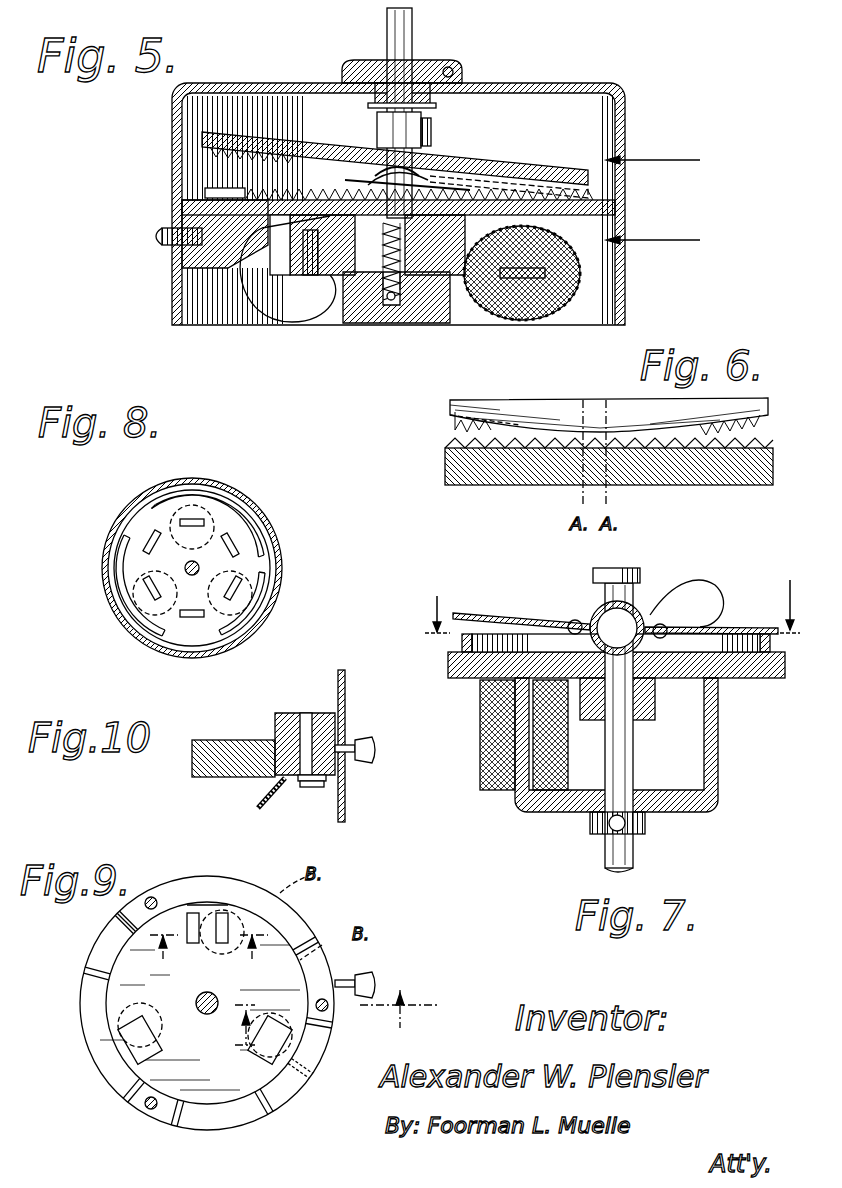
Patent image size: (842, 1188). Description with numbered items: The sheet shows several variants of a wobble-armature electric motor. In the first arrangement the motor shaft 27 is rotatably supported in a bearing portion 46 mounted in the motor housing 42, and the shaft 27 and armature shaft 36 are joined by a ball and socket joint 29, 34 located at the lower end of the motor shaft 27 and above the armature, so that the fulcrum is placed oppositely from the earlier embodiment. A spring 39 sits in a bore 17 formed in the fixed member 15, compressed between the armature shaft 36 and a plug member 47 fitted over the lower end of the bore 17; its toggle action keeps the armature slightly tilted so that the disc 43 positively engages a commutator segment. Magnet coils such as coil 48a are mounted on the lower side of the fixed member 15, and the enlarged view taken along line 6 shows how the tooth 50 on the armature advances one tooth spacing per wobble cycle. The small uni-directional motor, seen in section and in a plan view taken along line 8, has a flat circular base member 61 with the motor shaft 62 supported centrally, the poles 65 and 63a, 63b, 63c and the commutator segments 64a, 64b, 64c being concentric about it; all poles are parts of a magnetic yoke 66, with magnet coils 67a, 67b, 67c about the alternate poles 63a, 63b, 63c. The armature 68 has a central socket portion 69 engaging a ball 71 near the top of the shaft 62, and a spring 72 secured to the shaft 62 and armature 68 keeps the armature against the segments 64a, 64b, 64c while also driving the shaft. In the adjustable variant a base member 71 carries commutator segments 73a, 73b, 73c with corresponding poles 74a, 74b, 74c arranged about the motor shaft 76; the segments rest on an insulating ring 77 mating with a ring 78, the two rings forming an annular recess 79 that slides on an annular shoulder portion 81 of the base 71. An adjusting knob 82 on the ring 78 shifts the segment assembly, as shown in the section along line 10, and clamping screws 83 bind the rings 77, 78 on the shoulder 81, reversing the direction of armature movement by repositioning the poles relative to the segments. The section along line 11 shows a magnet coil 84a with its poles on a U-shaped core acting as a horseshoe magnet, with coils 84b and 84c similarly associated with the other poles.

In FIG. 5, the section line 6 is at (665, 200).
In FIG. 7, the section line 8 is at (612, 592).
In FIG. 9, the section line 10 is at (327, 1012).
In FIG. 9, the section line 11 is at (206, 960).
In FIG. 5, the fixed member 15 is at (615, 208).
In FIG. 5, the bore 17 is at (340, 312).
In FIG. 5, the motor shaft 27 is at (412, 33).
In FIG. 5, the ball 29 is at (377, 125).
In FIG. 5, the socket 34 is at (431, 135).
In FIG. 5, the armature shaft 36 is at (415, 176).
In FIG. 5, the spring 39 is at (400, 266).
In FIG. 5, the motor housing 42 is at (533, 83).
In FIG. 5, the disc 43 is at (345, 182).
In FIG. 5, the bearing portion 46 is at (430, 75).
In FIG. 5, the plug member 47 is at (400, 323).
In FIG. 5, the magnet coil 48a is at (580, 290).
In FIG. 6, the tooth 50 is at (606, 415).
In FIG. 8, the base member 61 is at (282, 555).
In FIG. 7, the base member 61 is at (448, 672).
In FIG. 8, the motor shaft 62 is at (189, 565).
In FIG. 7, the motor shaft 62 is at (633, 848).
In FIG. 8, the pole 63a is at (238, 585).
In FIG. 8, the pole 63b is at (148, 592).
In FIG. 8, the pole 63c is at (190, 519).
In FIG. 8, the commutator segment 64a is at (248, 508).
In FIG. 7, the commutator segment 64a is at (760, 615).
In FIG. 8, the commutator segment 64b is at (240, 632).
In FIG. 8, the commutator segment 64c is at (118, 552).
In FIG. 7, the commutator segment 64c is at (462, 644).
In FIG. 8, the poles 65 is at (145, 540).
In FIG. 8, the magnetic yoke 66 is at (233, 500).
In FIG. 7, the magnetic yoke 66 is at (555, 812).
In FIG. 8, the magnet coil 67a is at (272, 608).
In FIG. 8, the magnet coil 67b is at (100, 585).
In FIG. 7, the magnet coil 67b is at (480, 750).
In FIG. 8, the magnet coil 67c is at (206, 515).
In FIG. 7, the armature 68 is at (490, 612).
In FIG. 7, the socket portion 69 is at (598, 618).
In FIG. 7, the ball 71 is at (645, 620).
In FIG. 10, the ball 71 is at (220, 777).
In FIG. 9, the ball 71 is at (207, 1130).
In FIG. 7, the spring 72 is at (712, 585).
In FIG. 10, the commutator segment 73a is at (305, 713).
In FIG. 9, the commutator segment 73a is at (300, 935).
In FIG. 9, the commutator segment 73b is at (197, 880).
In FIG. 9, the commutator segment 73c is at (145, 1110).
In FIG. 9, the pole 74a is at (190, 920).
In FIG. 9, the pole 74b is at (135, 1030).
In FIG. 9, the pole 74c is at (280, 1035).
In FIG. 9, the motor shaft 76 is at (205, 1015).
In FIG. 10, the insulating ring 77 is at (280, 722).
In FIG. 10, the ring 78 is at (347, 772).
In FIG. 10, the annular recess 79 is at (282, 788).
In FIG. 10, the annular shoulder portion 81 is at (275, 745).
In FIG. 10, the adjusting knob 82 is at (370, 740).
In FIG. 9, the adjusting knob 82 is at (370, 975).
In FIG. 10, the clamping screws 83 is at (346, 730).
In FIG. 9, the magnet coil 84a is at (226, 960).
In FIG. 9, the contact block 84b is at (118, 1055).
In FIG. 9, the contact block 84c is at (290, 1075).